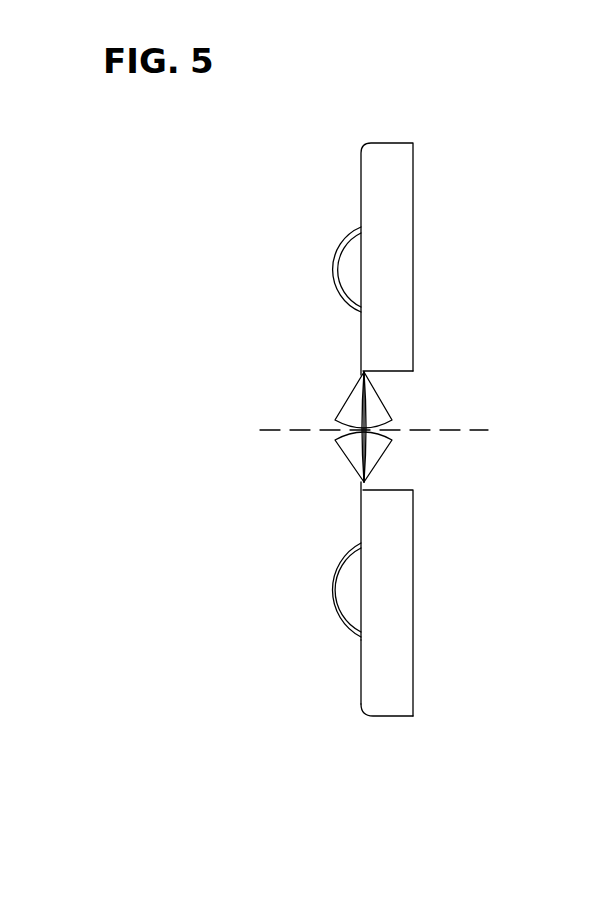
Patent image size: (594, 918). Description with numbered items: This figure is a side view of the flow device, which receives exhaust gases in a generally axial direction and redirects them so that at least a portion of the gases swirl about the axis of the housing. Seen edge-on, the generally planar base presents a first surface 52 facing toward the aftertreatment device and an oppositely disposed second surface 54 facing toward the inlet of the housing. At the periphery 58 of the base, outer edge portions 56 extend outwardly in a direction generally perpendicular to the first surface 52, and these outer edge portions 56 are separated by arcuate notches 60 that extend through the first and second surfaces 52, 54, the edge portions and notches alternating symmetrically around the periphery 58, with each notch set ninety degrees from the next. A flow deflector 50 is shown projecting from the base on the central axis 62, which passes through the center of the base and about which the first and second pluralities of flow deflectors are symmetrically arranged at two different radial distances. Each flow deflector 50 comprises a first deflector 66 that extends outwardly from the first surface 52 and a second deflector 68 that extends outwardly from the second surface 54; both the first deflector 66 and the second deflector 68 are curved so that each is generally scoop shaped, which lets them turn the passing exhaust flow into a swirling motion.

The flow deflector 50 is at (297, 250).
The first surface 52 is at (361, 497).
The second surface 54 is at (366, 483).
The outer edge portion 56 is at (395, 716).
The periphery 58 is at (361, 687).
The notch 60 is at (395, 372).
The central axis 62 is at (450, 430).
The first deflector 66 is at (332, 237).
The second deflector 68 is at (396, 452).